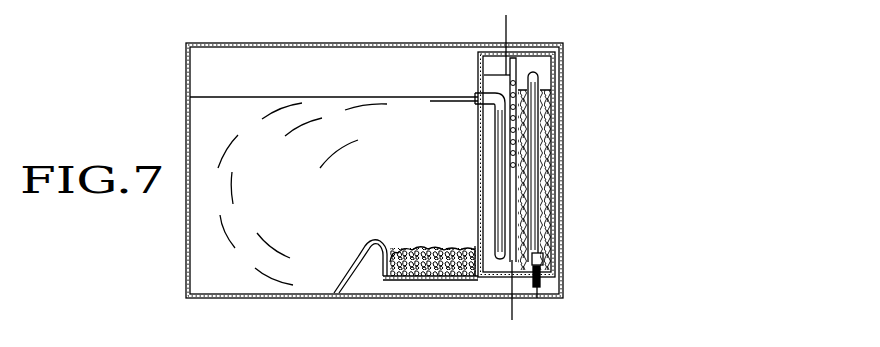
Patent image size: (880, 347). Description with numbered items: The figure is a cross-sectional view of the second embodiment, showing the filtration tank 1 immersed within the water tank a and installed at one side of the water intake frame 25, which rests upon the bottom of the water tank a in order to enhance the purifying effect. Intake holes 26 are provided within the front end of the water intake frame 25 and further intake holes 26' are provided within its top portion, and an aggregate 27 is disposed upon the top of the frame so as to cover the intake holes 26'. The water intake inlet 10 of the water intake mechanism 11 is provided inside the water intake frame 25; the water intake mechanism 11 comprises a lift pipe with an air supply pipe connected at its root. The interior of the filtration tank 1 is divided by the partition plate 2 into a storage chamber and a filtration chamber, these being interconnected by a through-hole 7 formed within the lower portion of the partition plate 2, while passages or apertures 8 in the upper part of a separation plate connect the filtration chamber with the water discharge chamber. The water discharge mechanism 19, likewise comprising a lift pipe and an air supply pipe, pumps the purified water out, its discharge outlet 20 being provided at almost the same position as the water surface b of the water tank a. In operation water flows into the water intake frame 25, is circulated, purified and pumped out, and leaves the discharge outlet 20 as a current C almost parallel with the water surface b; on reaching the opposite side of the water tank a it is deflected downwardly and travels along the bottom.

The water tank a is at (563, 128).
The water surface b is at (298, 97).
The current C is at (440, 102).
The filtration tank 1 is at (478, 78).
The partition plate 2 is at (520, 186).
The through-hole 7 is at (511, 266).
The passages or apertures 8 is at (496, 76).
The water inlet 10 is at (537, 290).
The water intake mechanism 11 is at (539, 80).
The water discharge mechanism 19 is at (497, 153).
The discharge outlet 20 is at (477, 99).
The water intake frame 25 is at (364, 249).
The intake holes 26 is at (334, 272).
The intake holes 26' is at (430, 304).
The aggregate 27 is at (440, 248).